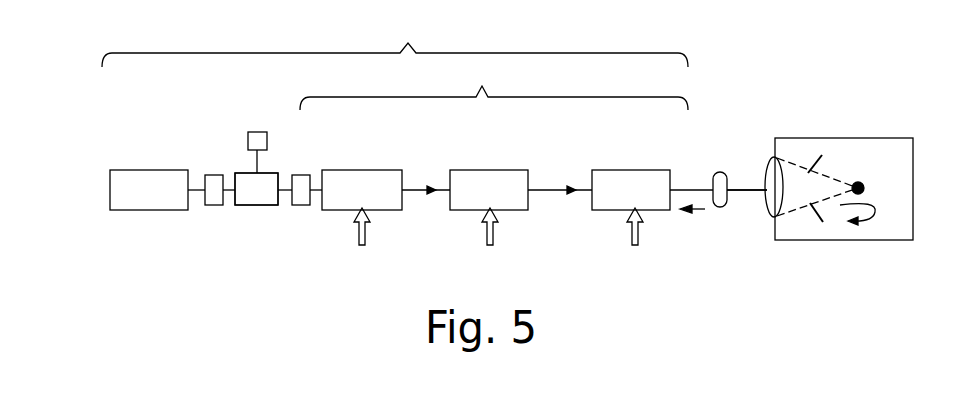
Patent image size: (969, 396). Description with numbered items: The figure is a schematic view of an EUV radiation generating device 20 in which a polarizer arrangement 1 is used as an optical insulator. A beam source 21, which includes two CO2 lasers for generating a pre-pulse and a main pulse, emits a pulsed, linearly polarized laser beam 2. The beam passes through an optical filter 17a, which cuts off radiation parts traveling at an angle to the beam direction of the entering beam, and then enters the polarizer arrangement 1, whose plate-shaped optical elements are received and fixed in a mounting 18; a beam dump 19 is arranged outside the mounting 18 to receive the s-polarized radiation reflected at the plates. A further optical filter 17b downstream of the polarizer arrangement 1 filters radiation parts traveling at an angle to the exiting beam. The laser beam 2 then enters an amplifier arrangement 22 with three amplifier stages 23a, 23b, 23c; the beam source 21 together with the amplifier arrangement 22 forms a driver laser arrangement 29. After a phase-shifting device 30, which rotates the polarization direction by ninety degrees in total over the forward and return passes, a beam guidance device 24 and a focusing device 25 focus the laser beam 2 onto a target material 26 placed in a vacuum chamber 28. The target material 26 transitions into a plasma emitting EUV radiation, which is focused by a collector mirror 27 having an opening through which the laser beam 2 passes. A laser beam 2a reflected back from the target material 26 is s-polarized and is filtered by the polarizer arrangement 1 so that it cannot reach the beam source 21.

The polarizer arrangement 1 is at (257, 205).
The laser beam 2 is at (205, 186).
The reflected-back laser beam 2a is at (697, 213).
The optical filter 17a is at (214, 199).
The further optical filter 17b is at (298, 199).
The mounting 18 is at (243, 205).
The beam dump 19 is at (257, 130).
The EUV radiation generating device 20 is at (400, 114).
The beam source 21 is at (155, 186).
The amplifier arrangement 22 is at (494, 83).
The amplifier stage 23a is at (367, 188).
The amplifier stage 23b is at (495, 188).
The amplifier stage 23c is at (637, 188).
The beam guidance device 24 is at (750, 191).
The focusing device 25 is at (772, 173).
The target material 26 is at (862, 185).
The collector mirror 27 is at (812, 215).
The vacuum chamber 28 is at (847, 138).
The driver laser arrangement 29 is at (395, 39).
The phase-shifting device 30 is at (720, 172).